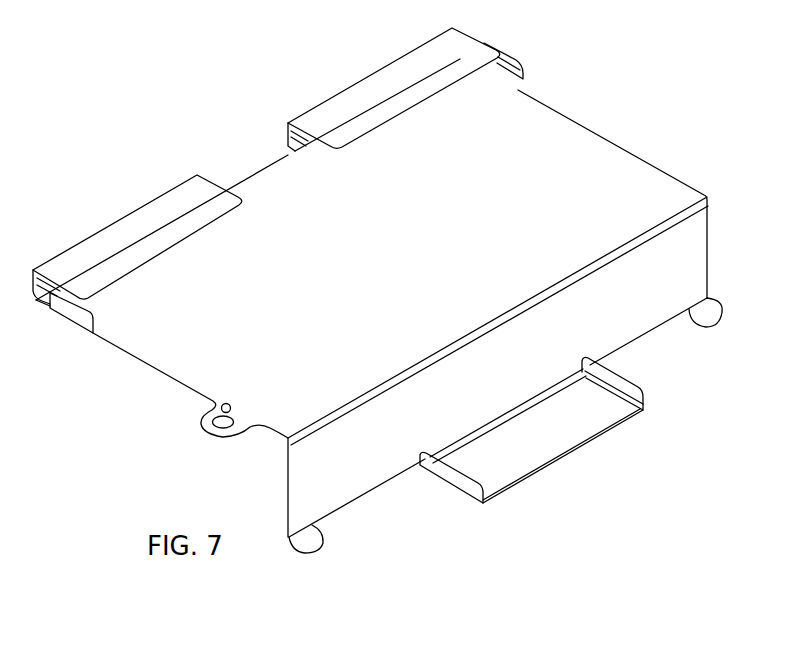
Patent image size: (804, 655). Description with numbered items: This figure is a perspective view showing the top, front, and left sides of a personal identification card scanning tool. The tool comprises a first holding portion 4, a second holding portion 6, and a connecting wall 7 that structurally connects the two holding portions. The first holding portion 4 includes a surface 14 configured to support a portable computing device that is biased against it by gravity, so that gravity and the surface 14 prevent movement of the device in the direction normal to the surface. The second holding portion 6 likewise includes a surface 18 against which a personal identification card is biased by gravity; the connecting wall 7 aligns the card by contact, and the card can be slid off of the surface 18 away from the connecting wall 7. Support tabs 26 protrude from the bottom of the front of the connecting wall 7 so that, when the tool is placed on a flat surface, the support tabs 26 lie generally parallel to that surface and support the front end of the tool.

The first holding portion 4 is at (293, 212).
The second holding portion 6 is at (615, 427).
The connecting wall 7 is at (305, 475).
The surface 14 is at (152, 332).
The surface 18 is at (532, 450).
The support tabs 26 is at (303, 542).